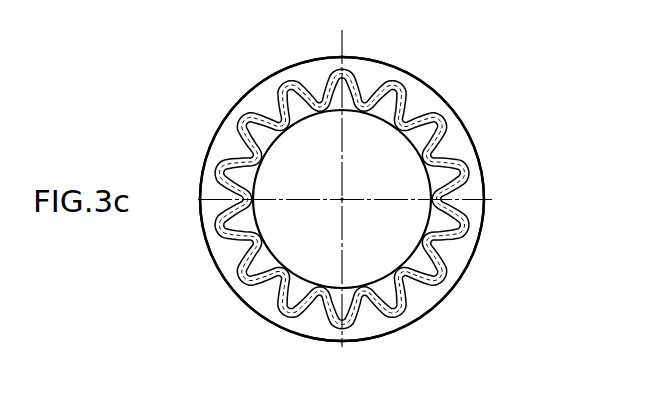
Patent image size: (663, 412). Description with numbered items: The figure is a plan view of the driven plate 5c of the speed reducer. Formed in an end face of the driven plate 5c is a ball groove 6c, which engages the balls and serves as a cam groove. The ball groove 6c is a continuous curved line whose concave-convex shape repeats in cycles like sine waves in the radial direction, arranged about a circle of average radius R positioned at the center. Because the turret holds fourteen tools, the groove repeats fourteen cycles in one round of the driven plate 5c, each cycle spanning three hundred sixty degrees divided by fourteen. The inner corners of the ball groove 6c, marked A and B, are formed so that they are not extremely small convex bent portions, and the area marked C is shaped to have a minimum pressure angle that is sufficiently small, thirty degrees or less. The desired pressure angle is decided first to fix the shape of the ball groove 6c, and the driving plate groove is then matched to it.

The driven plate 5c is at (425, 303).
The ball groove 6c is at (428, 108).
The inner corner of the ball groove A is at (486, 188).
The inner corner of the ball groove B is at (448, 147).
The area of minimum pressure angle C is at (372, 75).
The band thickness S is at (253, 112).
The average radius R is at (262, 117).